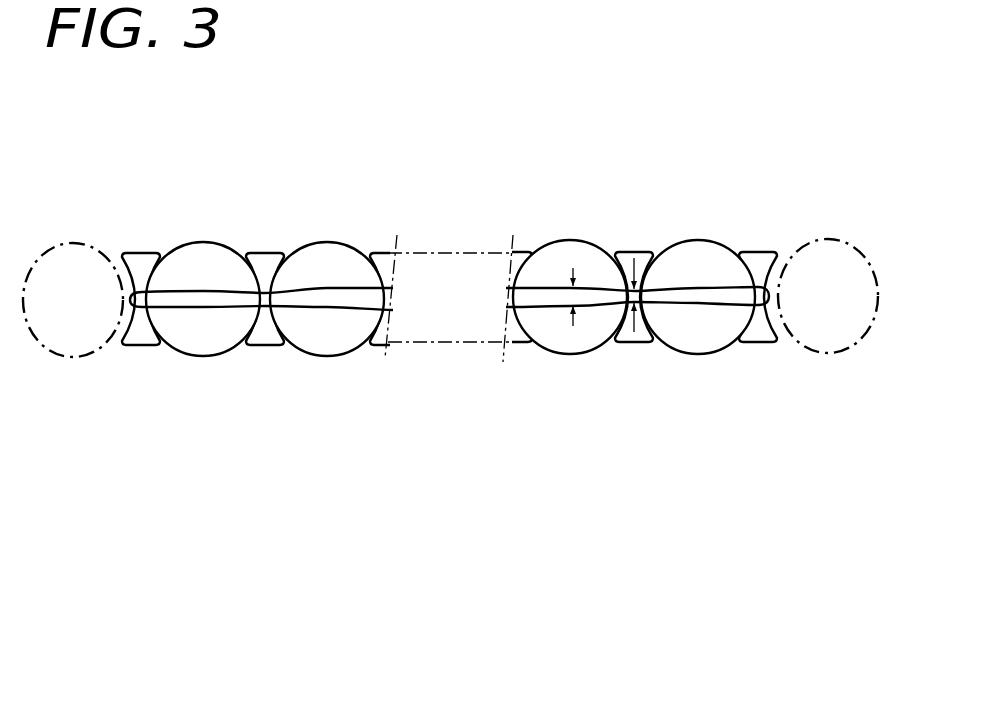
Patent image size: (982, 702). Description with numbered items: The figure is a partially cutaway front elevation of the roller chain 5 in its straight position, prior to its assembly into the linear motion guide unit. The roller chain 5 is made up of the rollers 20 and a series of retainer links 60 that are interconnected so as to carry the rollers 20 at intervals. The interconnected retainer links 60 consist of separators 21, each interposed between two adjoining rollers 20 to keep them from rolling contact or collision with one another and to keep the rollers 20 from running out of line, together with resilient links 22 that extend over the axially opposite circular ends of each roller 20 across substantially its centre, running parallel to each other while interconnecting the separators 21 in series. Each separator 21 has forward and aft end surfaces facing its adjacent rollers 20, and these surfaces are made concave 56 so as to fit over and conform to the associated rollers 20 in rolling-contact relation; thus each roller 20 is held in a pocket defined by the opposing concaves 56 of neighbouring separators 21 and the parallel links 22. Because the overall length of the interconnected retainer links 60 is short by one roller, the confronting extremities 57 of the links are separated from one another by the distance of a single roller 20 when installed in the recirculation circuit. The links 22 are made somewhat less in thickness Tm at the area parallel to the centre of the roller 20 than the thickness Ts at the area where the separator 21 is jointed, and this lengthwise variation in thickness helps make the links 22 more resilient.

The roller chain 5 is at (601, 234).
The roller 20 is at (303, 270).
The separator 21 is at (145, 343).
The resilient link 22 is at (232, 298).
The concave 56 is at (280, 322).
The confronting extremity 57 is at (764, 306).
The retainer link 60 is at (182, 300).
The thickness at an area parallel to the centre of the roller Tm is at (582, 282).
The thickness at an area to which the separator is jointed Ts is at (660, 286).